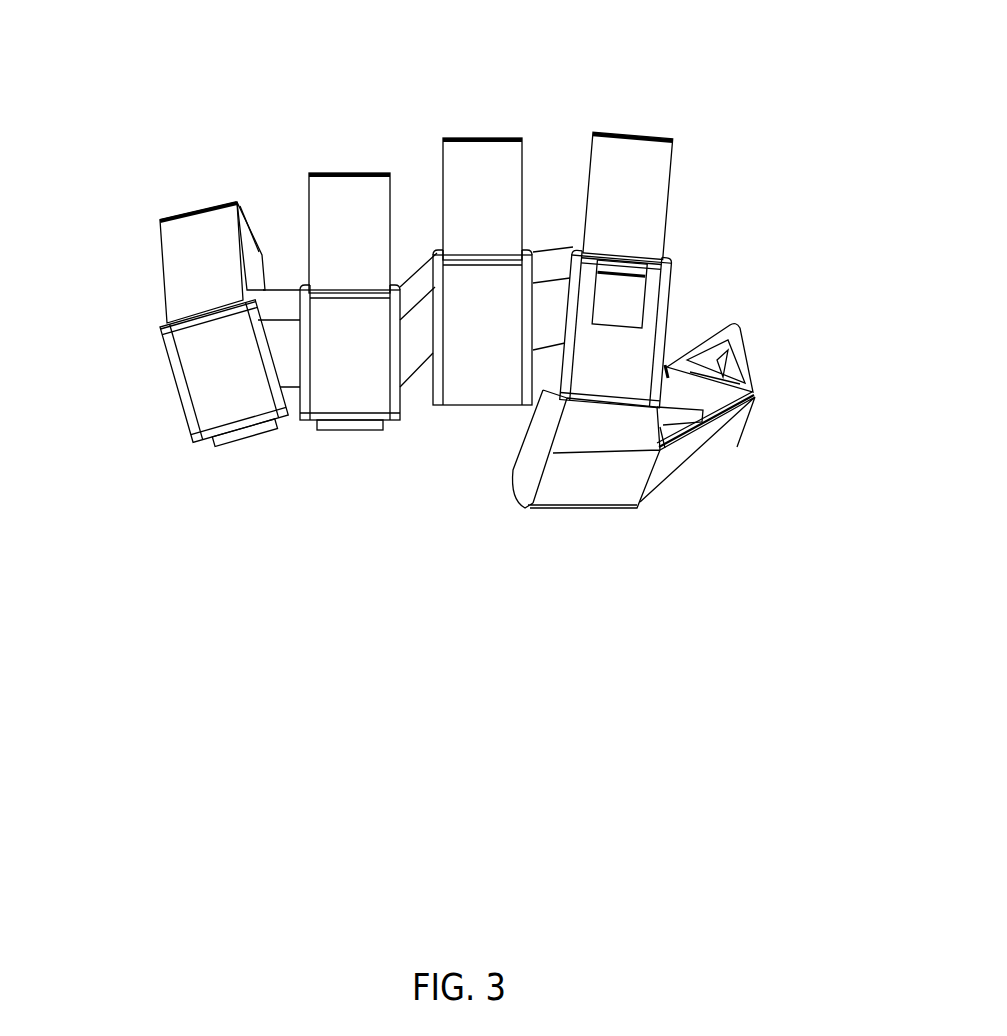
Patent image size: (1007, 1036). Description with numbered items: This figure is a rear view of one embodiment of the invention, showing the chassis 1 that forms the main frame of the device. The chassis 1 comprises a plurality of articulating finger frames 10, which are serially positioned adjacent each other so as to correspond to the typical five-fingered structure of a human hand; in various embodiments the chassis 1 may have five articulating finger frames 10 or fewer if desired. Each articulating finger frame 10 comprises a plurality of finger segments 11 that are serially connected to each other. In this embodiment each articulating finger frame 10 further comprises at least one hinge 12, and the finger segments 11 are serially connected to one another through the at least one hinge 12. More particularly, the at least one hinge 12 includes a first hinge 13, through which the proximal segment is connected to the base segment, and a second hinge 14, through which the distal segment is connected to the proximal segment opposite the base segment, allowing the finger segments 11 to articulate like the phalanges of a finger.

The chassis 1 is at (448, 291).
The articulating finger frame 10 is at (448, 291).
The finger segment 11 is at (168, 255).
The hinge 12 is at (193, 212).
The first hinge 13 is at (480, 263).
The second hinge 14 is at (485, 137).